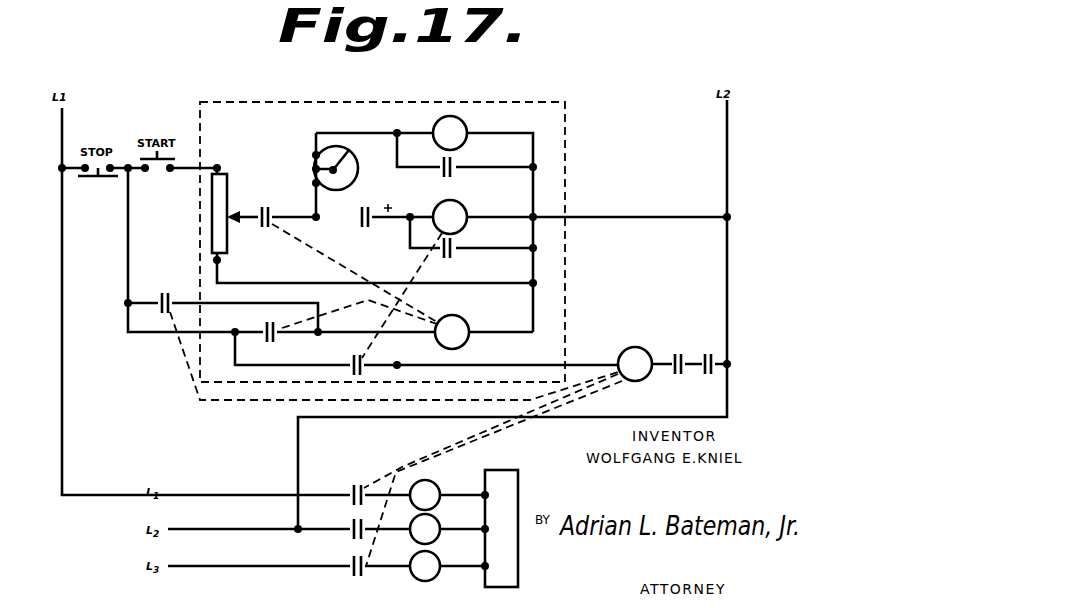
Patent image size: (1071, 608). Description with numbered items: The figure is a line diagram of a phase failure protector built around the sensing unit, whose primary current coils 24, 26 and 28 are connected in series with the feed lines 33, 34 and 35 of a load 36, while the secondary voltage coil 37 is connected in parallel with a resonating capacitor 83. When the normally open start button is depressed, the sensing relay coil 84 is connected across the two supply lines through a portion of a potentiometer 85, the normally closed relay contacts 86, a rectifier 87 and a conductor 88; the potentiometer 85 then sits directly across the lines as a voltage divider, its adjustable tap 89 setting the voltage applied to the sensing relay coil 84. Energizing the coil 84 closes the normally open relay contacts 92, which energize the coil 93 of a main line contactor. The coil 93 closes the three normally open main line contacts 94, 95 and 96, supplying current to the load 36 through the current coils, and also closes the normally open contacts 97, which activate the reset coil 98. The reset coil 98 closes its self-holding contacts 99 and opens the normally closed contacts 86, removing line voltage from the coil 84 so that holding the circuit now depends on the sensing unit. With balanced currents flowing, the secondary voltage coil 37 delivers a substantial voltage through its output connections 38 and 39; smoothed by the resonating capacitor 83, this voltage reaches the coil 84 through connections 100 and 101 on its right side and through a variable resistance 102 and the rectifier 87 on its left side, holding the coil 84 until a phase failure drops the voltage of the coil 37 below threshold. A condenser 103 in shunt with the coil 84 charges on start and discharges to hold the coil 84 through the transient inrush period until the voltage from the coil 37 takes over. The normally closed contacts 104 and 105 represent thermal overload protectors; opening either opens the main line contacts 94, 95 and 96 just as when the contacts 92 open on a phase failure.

The potentiometer 85 is at (212, 203).
The normally closed relay contacts 86 is at (266, 206).
The rectifier 87 is at (362, 225).
The tap 89 is at (228, 224).
The variable resistance 102 is at (356, 182).
The output connection 38 is at (413, 122).
The secondary voltage coil 37 is at (450, 133).
The output connection 39 is at (514, 128).
The resonating capacitor 83 is at (440, 160).
The connection 100 is at (533, 202).
The connection 101 is at (514, 214).
The sensing relay coil 84 is at (436, 217).
The condenser 103 is at (456, 243).
The conductor 88 is at (648, 214).
The normally open contacts 97 is at (163, 296).
The normally open contacts 99 is at (264, 328).
The reset coil 98 is at (425, 332).
The normally open relay contacts 92 is at (353, 360).
The coil of main line contactor 93 is at (640, 346).
The normally closed contacts 104 is at (674, 354).
The normally closed contacts 105 is at (708, 375).
The normally open main line contact 94 is at (354, 490).
The normally open main line contact 95 is at (354, 528).
The normally open main line contact 96 is at (354, 565).
The current coil 24 is at (425, 495).
The current coil 28 is at (425, 529).
The current coil 26 is at (425, 566).
The feed line 33 is at (464, 493).
The feed line 35 is at (474, 527).
The feed line 34 is at (460, 568).
The load 36 is at (516, 470).